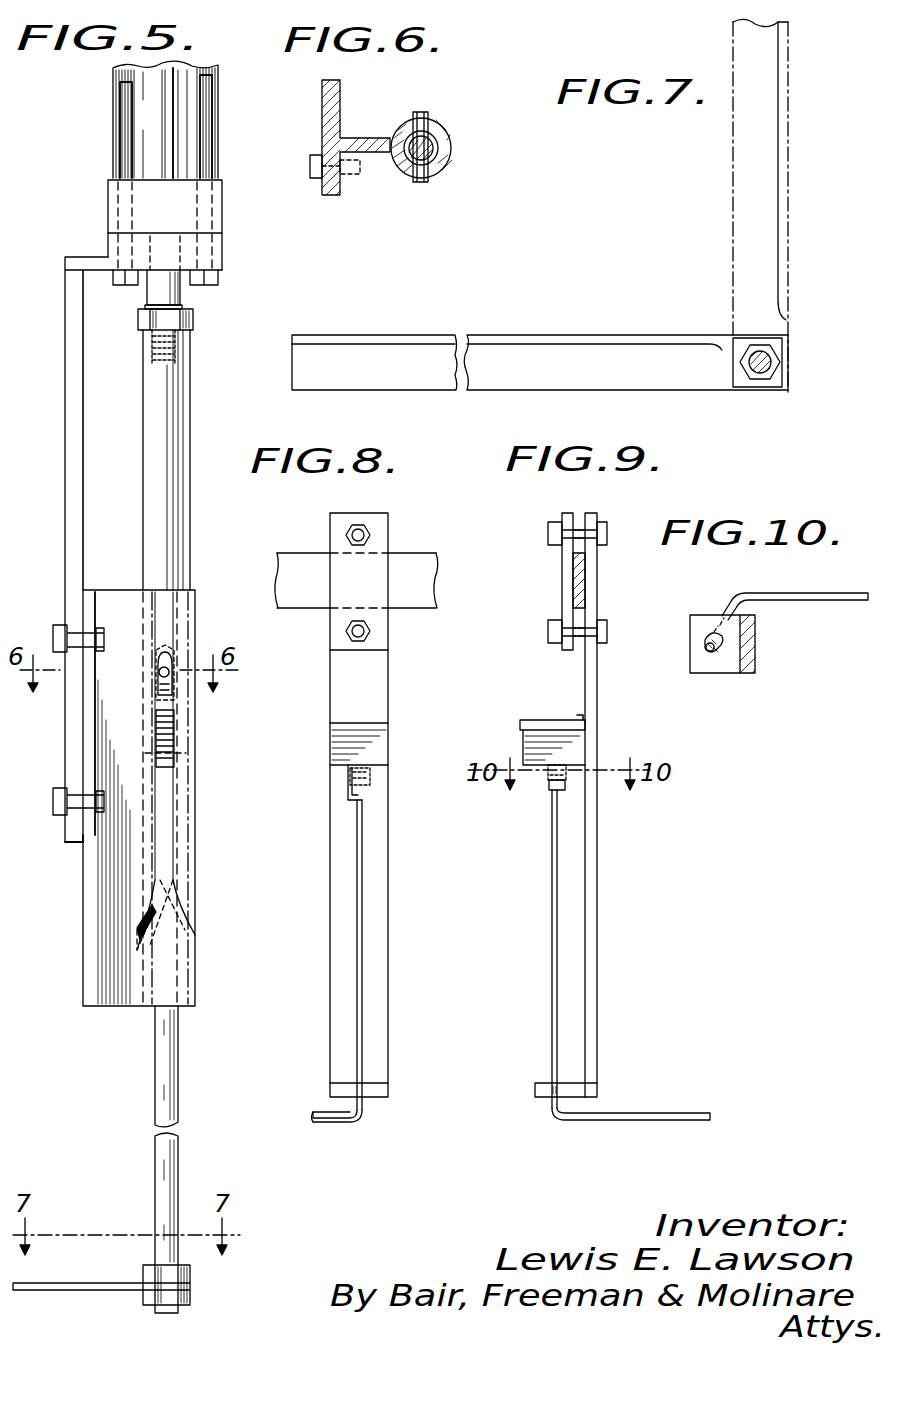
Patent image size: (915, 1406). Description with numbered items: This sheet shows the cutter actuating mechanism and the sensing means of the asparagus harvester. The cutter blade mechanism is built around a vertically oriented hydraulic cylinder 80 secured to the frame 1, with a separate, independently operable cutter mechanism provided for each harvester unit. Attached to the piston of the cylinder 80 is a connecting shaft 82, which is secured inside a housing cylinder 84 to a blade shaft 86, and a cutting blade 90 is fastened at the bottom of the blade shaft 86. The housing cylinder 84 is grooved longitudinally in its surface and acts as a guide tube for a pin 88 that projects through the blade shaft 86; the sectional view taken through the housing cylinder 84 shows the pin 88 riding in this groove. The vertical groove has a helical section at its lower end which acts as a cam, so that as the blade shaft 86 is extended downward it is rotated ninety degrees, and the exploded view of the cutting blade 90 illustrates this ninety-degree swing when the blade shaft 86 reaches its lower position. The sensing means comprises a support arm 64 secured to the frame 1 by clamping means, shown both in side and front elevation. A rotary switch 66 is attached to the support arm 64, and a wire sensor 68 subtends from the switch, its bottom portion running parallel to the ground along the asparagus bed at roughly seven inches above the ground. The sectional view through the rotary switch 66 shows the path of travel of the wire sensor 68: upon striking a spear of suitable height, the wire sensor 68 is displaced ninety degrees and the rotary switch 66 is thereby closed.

In FIG. 8, the frame 1 is at (413, 563).
In FIG. 9, the frame 1 is at (580, 582).
In FIG. 8, the support arm 64 is at (378, 905).
In FIG. 9, the support arm 64 is at (592, 868).
In FIG. 8, the rotary switch 66 is at (370, 745).
In FIG. 9, the rotary switch 66 is at (570, 747).
In FIG. 10, the rotary switch 66 is at (725, 662).
In FIG. 8, the wire sensor 68 is at (362, 1034).
In FIG. 9, the wire sensor 68 is at (645, 1113).
In FIG. 10, the wire sensor 68 is at (825, 595).
In FIG. 5, the hydraulic cylinder 80 is at (183, 143).
In FIG. 5, the connecting shaft 82 is at (177, 414).
In FIG. 6, the connecting shaft 82 is at (433, 160).
In FIG. 5, the housing cylinder 84 is at (195, 810).
In FIG. 6, the housing cylinder 84 is at (450, 139).
In FIG. 5, the blade shaft 86 is at (168, 1072).
In FIG. 5, the pin 88 is at (169, 668).
In FIG. 6, the pin 88 is at (422, 112).
In FIG. 5, the cutting blade 90 is at (112, 1290).
In FIG. 7, the cutting blade 90 is at (592, 357).